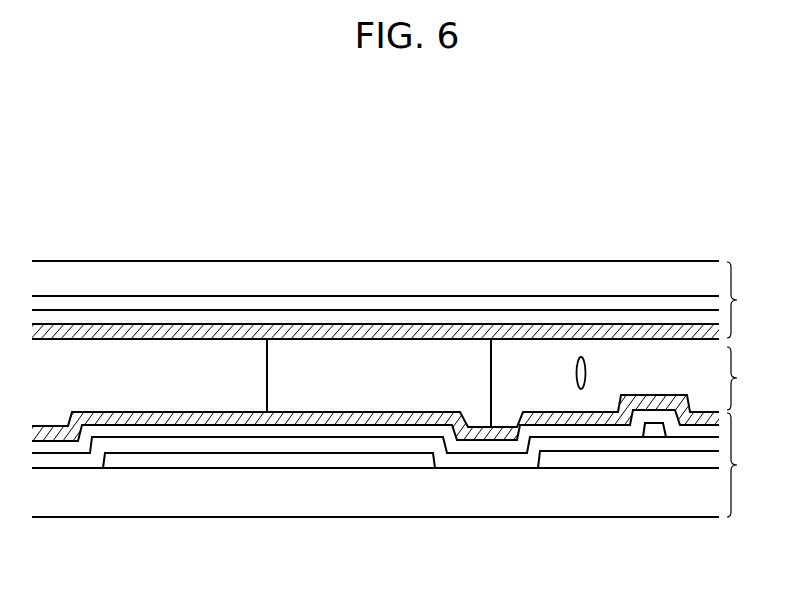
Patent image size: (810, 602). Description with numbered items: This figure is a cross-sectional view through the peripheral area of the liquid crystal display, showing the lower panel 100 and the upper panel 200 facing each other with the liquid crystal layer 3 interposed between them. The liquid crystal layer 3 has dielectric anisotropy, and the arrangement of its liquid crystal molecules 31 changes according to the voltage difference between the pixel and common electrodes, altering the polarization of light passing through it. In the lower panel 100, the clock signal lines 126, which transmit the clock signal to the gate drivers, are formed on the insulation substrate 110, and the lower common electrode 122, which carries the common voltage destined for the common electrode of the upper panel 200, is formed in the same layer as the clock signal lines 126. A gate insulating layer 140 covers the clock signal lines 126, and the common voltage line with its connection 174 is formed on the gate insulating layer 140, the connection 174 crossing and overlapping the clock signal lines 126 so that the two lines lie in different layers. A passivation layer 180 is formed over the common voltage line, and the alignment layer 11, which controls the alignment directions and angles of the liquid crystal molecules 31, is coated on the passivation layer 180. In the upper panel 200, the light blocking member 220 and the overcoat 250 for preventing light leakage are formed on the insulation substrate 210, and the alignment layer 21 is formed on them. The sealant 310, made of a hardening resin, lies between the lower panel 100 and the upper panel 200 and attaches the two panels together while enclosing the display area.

The liquid crystal layer 3 is at (742, 378).
The liquid crystal molecules 31 is at (586, 371).
The alignment layer 11 is at (192, 418).
The alignment layer 21 is at (386, 328).
The lower panel 100 is at (751, 465).
The insulation substrate 110 is at (98, 497).
The lower common electrode 122 is at (295, 458).
The clock signal lines 126 is at (590, 458).
The gate insulating layer 140 is at (485, 462).
The connection 174 is at (653, 430).
The passivation layer 180 is at (388, 430).
The upper panel 200 is at (750, 300).
The insulation substrate 210 is at (612, 280).
The light blocking member 220 is at (535, 303).
The overcoat 250 is at (461, 316).
The sealant 310 is at (312, 378).